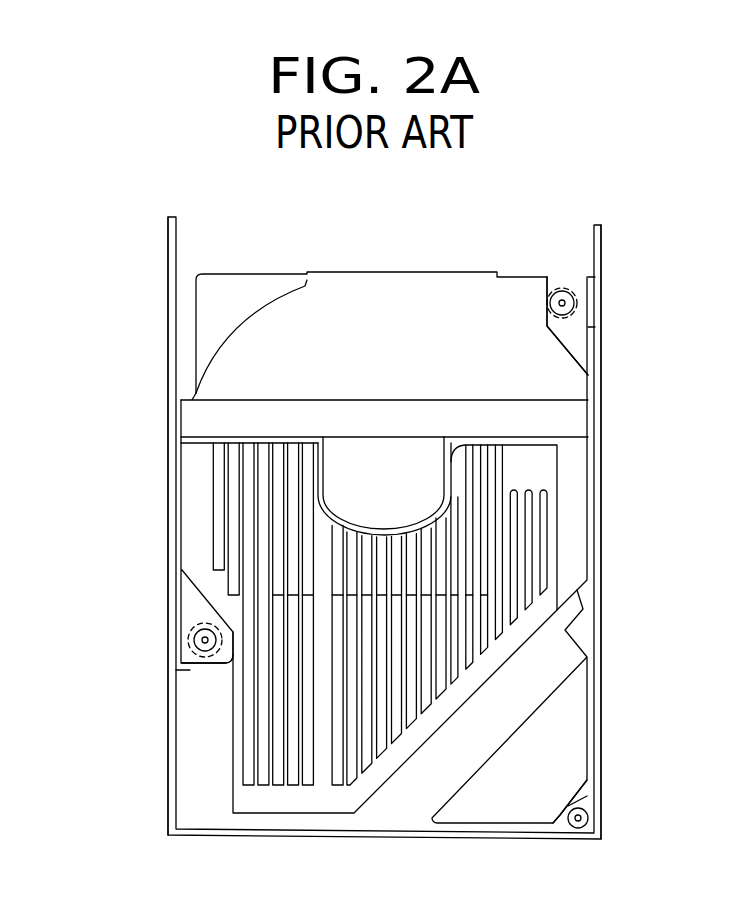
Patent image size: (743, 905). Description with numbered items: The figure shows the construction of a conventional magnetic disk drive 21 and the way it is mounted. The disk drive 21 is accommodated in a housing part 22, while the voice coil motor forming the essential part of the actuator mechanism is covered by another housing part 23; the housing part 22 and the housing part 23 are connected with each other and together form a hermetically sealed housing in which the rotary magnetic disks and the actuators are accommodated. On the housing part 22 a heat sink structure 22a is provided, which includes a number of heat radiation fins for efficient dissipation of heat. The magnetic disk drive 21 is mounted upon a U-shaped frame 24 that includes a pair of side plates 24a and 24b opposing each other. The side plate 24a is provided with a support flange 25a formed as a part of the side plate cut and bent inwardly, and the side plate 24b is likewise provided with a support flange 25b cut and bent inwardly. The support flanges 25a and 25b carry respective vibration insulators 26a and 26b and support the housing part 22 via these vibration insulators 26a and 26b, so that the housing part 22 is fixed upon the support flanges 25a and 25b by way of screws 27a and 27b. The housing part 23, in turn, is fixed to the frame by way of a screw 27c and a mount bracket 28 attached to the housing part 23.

The magnetic disk drive 21 is at (221, 753).
The housing part 22 is at (582, 475).
The heat sink structure 22a is at (553, 535).
The housing part 23 is at (582, 712).
The U-shaped frame 24 is at (385, 518).
The side plate 24a is at (168, 318).
The side plate 24b is at (603, 228).
The support flange 25a is at (190, 670).
The support flange 25b is at (583, 275).
The vibration insulator 26a is at (195, 630).
The vibration insulator 26b is at (547, 285).
The screw 27a is at (202, 641).
The screw 27b is at (566, 303).
The screw 27c is at (590, 818).
The mount bracket 28 is at (590, 797).